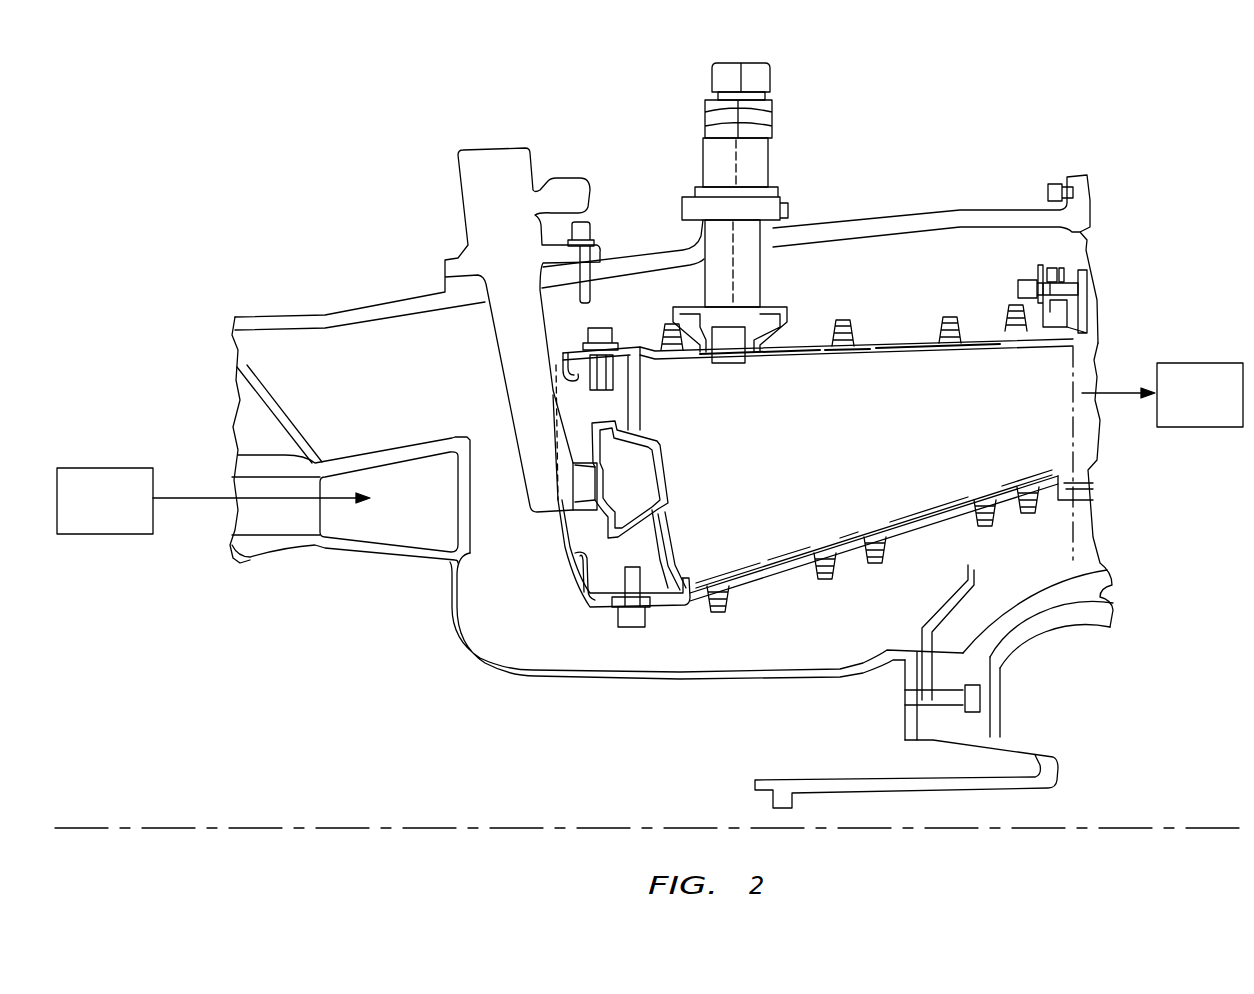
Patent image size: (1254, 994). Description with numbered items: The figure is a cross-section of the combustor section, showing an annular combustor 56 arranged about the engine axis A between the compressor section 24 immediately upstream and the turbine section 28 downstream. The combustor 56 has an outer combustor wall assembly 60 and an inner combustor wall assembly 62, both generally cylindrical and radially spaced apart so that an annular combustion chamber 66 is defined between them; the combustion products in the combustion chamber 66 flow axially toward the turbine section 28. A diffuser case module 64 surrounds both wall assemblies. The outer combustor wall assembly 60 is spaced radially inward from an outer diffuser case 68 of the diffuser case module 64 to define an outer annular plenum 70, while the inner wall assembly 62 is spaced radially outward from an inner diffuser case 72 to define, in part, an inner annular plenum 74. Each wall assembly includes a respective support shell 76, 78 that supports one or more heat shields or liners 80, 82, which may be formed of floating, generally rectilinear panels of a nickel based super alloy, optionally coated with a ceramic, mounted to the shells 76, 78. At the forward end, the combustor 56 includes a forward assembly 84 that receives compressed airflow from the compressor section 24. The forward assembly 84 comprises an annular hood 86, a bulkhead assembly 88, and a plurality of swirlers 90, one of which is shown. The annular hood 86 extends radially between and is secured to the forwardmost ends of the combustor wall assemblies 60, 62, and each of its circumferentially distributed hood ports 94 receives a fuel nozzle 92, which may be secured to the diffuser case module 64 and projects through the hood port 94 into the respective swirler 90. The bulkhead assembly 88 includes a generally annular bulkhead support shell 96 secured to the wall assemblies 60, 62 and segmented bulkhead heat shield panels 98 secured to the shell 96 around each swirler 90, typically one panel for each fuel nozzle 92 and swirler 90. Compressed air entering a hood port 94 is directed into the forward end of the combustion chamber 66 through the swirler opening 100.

The compressor section 24 is at (120, 514).
The turbine section 28 is at (1215, 408).
The annular combustor 56 is at (585, 427).
The outer combustor wall assembly 60 is at (863, 307).
The inner combustor wall assembly 62 is at (891, 541).
The diffuser case module 64 is at (893, 212).
The annular combustion chamber 66 is at (892, 433).
The outer diffuser case 68 is at (822, 215).
The outer annular plenum 70 is at (838, 281).
The inner diffuser case 72 is at (630, 682).
The inner annular plenum 74 is at (816, 651).
The support shell 76 is at (873, 347).
The support shell 78 is at (948, 522).
The liner 80 is at (766, 360).
The liner 82 is at (765, 578).
The forward assembly 84 is at (573, 614).
The annular hood 86 is at (570, 565).
The bulkhead assembly 88 is at (656, 410).
The swirler 90 is at (672, 512).
The fuel nozzle 92 is at (525, 284).
The hood port 94 is at (557, 551).
The bulkhead support shell 96 is at (585, 590).
The bulkhead panel 98 is at (672, 541).
The swirler opening 100 is at (665, 470).
The engine central axis A is at (1188, 827).